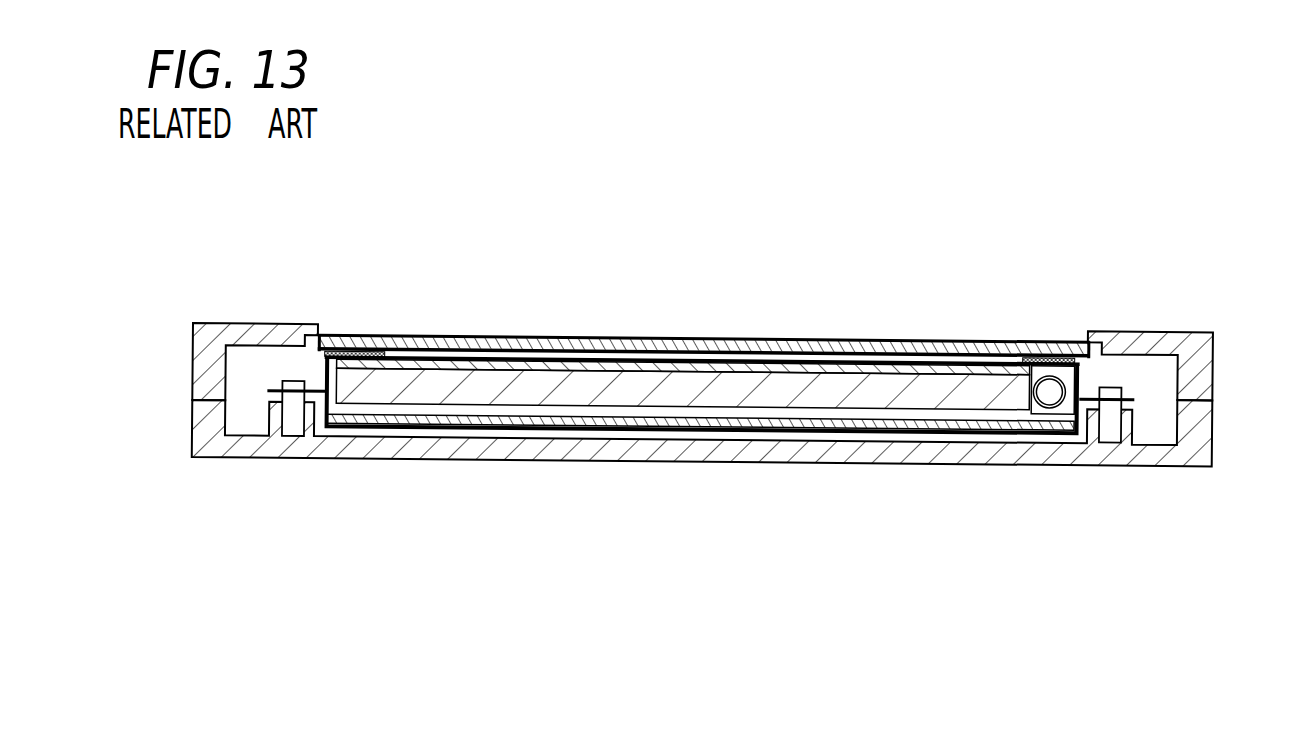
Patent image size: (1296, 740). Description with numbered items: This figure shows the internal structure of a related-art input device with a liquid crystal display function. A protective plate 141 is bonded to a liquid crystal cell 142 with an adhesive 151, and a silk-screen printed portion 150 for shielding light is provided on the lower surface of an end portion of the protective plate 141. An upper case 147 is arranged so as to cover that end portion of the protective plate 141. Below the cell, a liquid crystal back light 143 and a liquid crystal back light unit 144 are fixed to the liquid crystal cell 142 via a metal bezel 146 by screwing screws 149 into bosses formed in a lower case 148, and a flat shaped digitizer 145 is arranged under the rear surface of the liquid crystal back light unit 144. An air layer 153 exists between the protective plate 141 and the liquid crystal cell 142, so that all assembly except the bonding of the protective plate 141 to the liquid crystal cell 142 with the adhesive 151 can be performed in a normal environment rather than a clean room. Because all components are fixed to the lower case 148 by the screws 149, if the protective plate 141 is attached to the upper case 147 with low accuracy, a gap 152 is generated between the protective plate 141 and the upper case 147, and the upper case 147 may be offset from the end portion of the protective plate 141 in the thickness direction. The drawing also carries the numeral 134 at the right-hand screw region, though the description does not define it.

The screw 134 is at (1133, 409).
The protective plate 141 is at (622, 337).
The liquid crystal cell 142 is at (777, 364).
The liquid crystal back light 143 is at (1040, 347).
The liquid crystal back light unit 144 is at (767, 392).
The digitizer 145 is at (655, 418).
The metal bezel 146 is at (1083, 371).
The upper case 147 is at (208, 355).
The lower case 148 is at (247, 446).
The screw 149 is at (1107, 427).
The silk-screen printed portion 150 is at (395, 345).
The adhesive 151 is at (362, 349).
The gap 152 is at (330, 326).
The air layer 153 is at (538, 351).